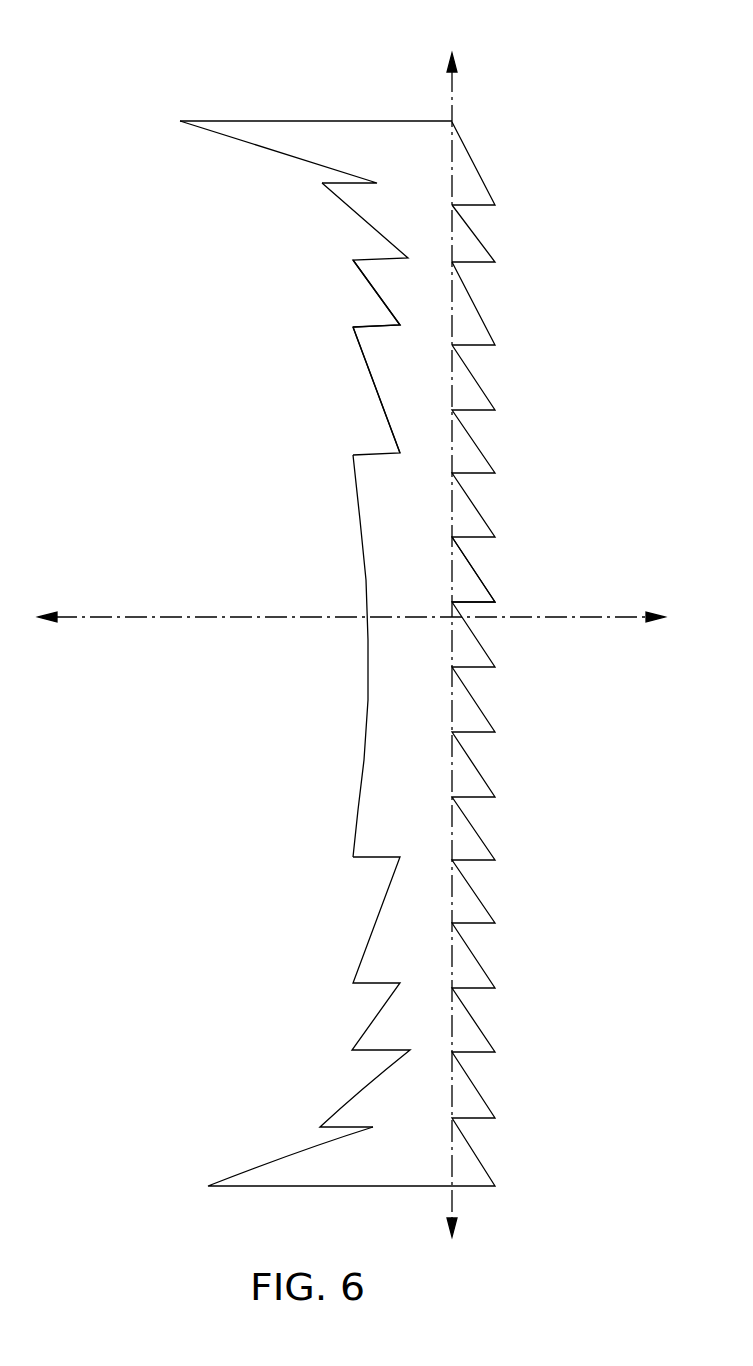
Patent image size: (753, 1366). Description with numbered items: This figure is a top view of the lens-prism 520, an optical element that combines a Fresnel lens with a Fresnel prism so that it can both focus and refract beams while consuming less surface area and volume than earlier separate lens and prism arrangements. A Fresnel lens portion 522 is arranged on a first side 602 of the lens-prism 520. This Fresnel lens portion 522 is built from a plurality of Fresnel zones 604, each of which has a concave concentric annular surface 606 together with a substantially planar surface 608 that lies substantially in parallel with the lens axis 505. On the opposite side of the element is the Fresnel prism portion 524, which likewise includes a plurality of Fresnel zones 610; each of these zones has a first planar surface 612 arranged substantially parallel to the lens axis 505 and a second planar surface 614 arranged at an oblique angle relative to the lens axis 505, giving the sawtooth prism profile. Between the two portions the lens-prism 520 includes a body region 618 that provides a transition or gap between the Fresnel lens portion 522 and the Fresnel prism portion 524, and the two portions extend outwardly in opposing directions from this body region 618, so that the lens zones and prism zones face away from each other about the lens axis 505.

The lens axis 505 is at (595, 613).
The lens-prism 520 is at (467, 100).
The Fresnel lens portion 522 is at (240, 123).
The Fresnel prism portion 524 is at (430, 160).
The first side 602 is at (285, 107).
The Fresnel zones 604 is at (468, 43).
The concave concentric annular surface 606 is at (363, 355).
The substantially planar surface 608 is at (325, 310).
The Fresnel zones 610 is at (468, 255).
The first planar surface 612 is at (468, 267).
The second planar surface 614 is at (478, 228).
The body region 618 is at (452, 565).